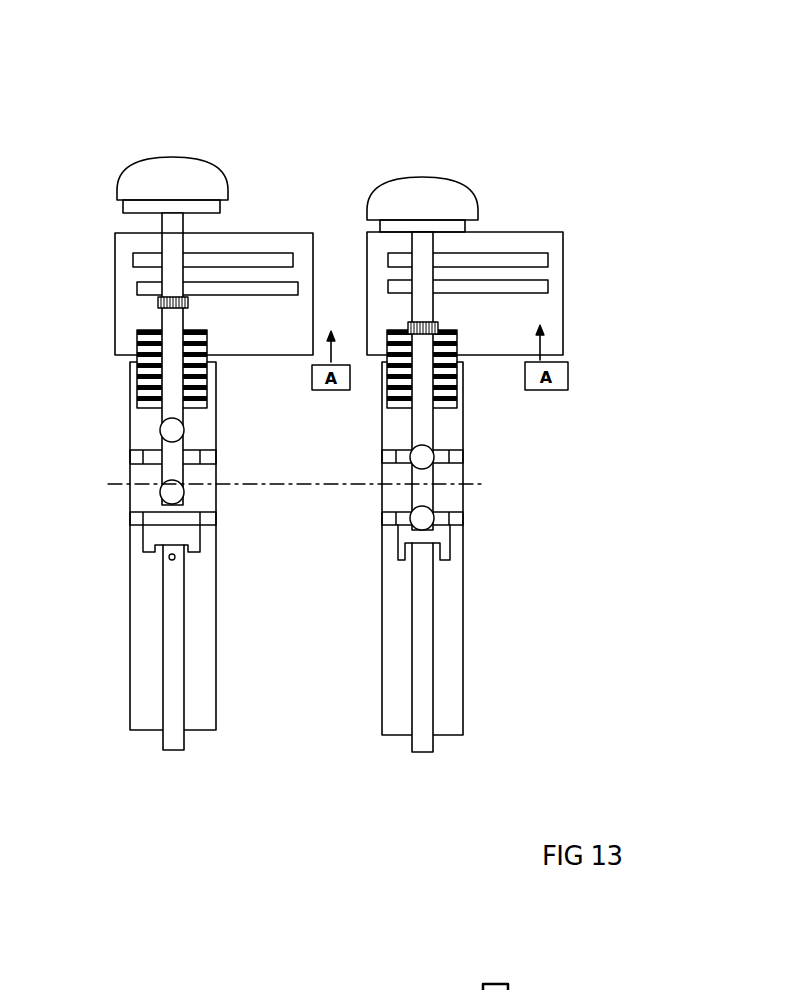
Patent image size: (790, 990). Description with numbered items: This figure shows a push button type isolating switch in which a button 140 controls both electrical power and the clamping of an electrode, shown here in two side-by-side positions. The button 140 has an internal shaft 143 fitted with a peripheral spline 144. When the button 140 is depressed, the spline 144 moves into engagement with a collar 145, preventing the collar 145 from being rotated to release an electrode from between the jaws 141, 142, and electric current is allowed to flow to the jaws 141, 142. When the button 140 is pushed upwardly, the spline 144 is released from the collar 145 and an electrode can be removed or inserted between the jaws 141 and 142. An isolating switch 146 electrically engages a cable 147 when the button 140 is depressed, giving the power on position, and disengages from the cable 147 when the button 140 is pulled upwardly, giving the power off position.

The button 140 is at (400, 176).
The jaw 141 is at (493, 257).
The jaw 142 is at (525, 288).
The internal shaft 143 is at (168, 248).
The peripheral spline 144 is at (440, 338).
The collar 145 is at (398, 417).
The isolating switch 146 is at (155, 478).
The cable 147 is at (412, 685).